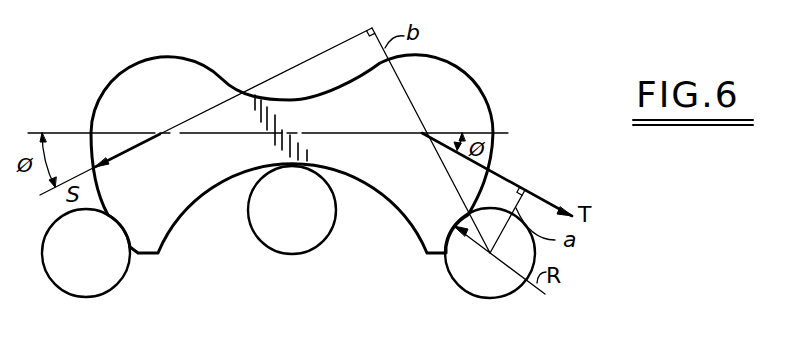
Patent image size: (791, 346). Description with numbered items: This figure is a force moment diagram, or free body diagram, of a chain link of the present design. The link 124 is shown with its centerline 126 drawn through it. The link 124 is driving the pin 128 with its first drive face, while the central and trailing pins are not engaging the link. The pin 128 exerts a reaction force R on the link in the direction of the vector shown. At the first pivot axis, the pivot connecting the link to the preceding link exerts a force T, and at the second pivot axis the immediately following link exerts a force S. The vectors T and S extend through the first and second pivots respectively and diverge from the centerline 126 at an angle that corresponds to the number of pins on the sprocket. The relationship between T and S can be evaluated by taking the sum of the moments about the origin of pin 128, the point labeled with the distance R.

The link 124 is at (477, 79).
The centerline 126 is at (228, 133).
The pin 128 is at (458, 268).